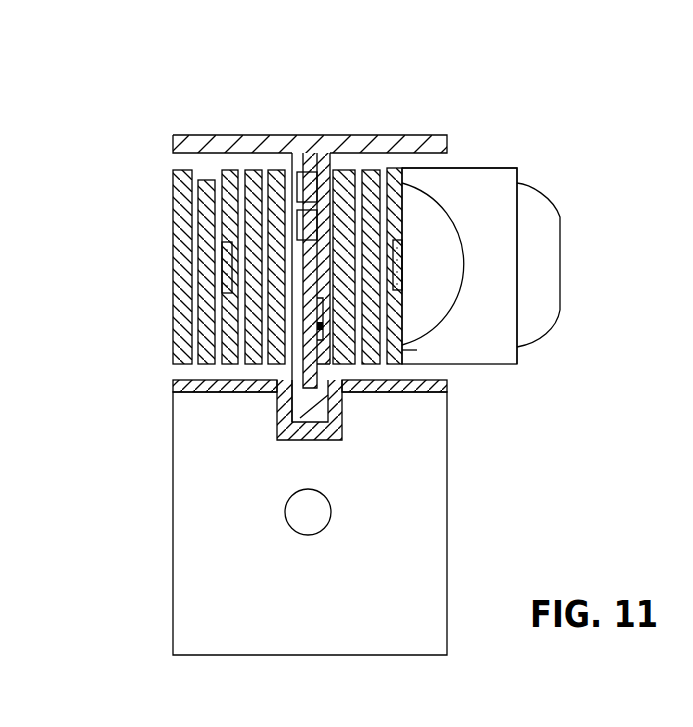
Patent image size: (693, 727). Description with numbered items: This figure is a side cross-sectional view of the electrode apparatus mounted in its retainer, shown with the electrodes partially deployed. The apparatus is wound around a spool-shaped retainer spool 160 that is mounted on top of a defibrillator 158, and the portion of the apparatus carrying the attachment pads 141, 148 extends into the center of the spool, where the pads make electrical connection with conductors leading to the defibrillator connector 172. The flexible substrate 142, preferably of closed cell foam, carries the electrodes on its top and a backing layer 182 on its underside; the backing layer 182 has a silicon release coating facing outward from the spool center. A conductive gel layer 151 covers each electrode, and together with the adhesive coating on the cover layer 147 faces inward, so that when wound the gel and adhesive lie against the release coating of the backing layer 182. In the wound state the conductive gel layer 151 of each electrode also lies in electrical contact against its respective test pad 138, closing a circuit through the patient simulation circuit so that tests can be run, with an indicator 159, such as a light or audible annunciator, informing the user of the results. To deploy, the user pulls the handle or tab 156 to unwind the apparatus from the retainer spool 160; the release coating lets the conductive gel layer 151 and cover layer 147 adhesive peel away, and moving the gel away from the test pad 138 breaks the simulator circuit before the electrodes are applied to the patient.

The test pad 138 is at (227, 257).
The attachment pad 141 is at (319, 352).
The substrate 142 is at (463, 175).
The cover layer 147 is at (488, 188).
The attachment pad 148 is at (302, 180).
The conductive gel layer 151 is at (430, 295).
The handle or tab 156 is at (543, 312).
The defibrillator 158 is at (422, 547).
The indicator 159 is at (303, 518).
The retainer spool 160 is at (197, 145).
The defibrillator connector 172 is at (280, 432).
The backing layer 182 is at (417, 350).